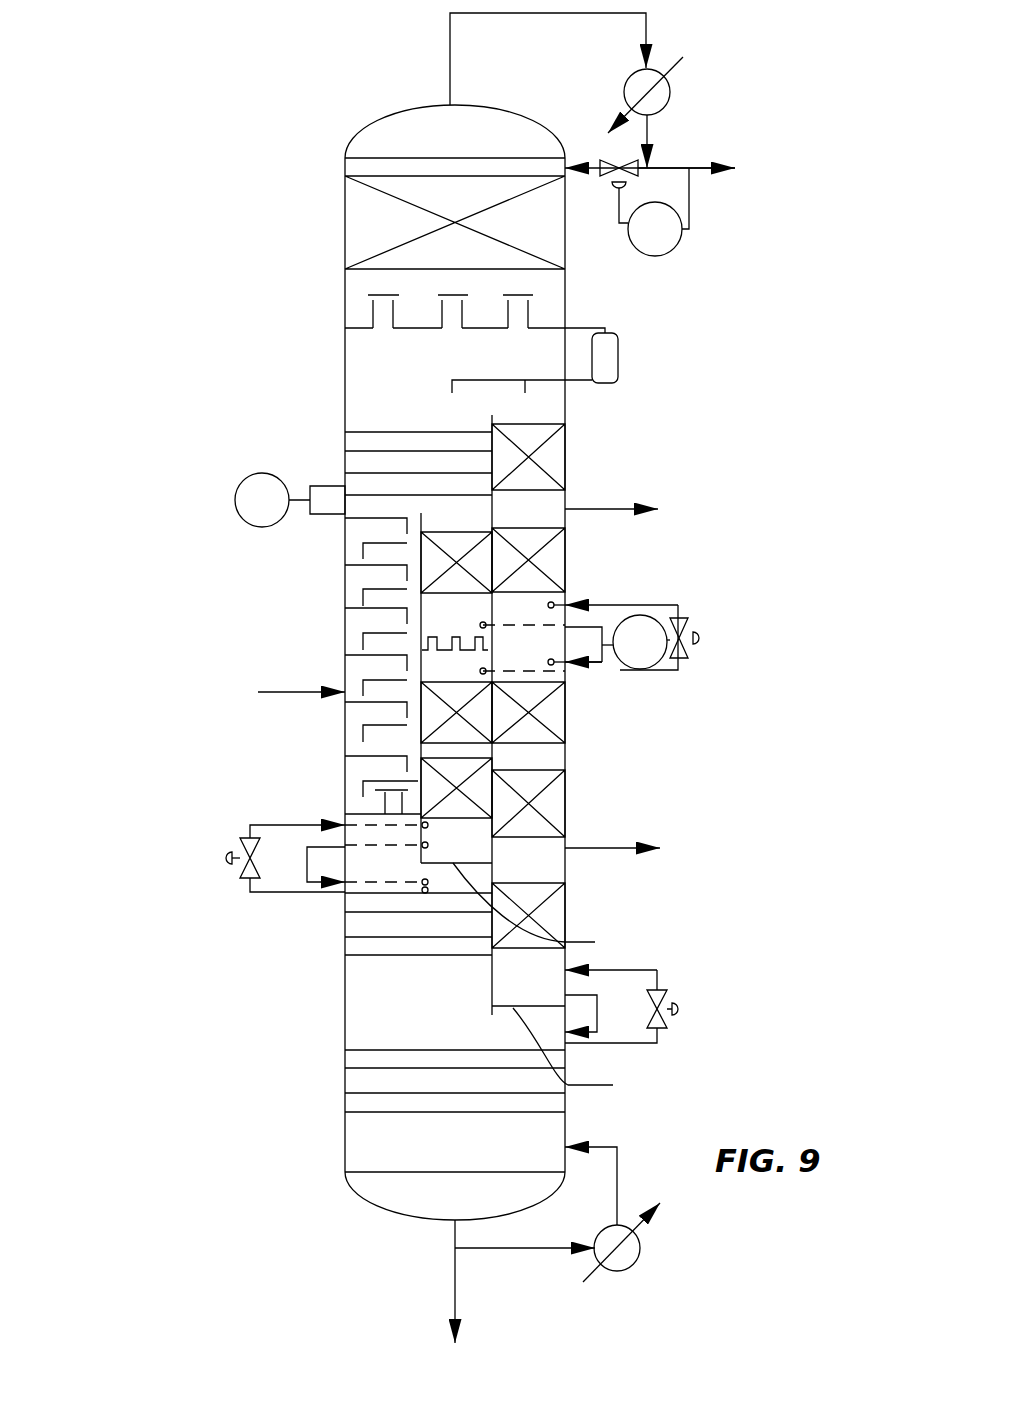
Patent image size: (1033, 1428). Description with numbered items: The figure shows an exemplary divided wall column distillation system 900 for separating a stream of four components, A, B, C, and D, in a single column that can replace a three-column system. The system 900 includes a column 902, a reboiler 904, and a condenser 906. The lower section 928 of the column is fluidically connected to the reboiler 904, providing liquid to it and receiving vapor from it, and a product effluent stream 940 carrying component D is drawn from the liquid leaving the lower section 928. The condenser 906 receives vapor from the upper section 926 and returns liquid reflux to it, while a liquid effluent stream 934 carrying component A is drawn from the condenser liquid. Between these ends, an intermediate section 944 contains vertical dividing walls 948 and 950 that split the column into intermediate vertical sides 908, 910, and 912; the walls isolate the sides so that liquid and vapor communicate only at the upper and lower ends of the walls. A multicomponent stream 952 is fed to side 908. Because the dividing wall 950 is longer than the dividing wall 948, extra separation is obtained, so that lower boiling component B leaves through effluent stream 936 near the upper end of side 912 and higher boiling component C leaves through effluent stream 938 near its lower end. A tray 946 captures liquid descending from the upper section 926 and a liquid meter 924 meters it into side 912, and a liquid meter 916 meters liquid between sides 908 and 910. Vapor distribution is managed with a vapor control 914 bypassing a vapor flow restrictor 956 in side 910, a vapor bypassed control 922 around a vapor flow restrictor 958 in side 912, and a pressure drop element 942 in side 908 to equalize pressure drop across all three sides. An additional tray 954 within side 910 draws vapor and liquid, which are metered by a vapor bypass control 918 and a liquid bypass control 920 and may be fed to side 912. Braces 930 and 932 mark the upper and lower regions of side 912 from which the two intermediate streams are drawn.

The distillation system 900 is at (340, 50).
The column 902 is at (345, 987).
The reboiler 904 is at (615, 1272).
The condenser 906 is at (670, 100).
The intermediate vertical side 908 is at (362, 574).
The intermediate vertical side 910 is at (438, 603).
The intermediate vertical side 912 is at (557, 760).
The vapor control 914 is at (232, 858).
The liquid meter 916 is at (260, 473).
The bypass control 918 is at (695, 640).
The bypass control 920 is at (615, 670).
The vapor bypassed control 922 is at (678, 1009).
The liquid meter 924 is at (618, 358).
The upper section 926 is at (338, 137).
The lower section 928 is at (338, 1025).
The upper side section 930 is at (697, 425).
The lower side section 932 is at (697, 682).
The liquid effluent stream 934 is at (707, 168).
The effluent stream 936 is at (622, 509).
The effluent stream 938 is at (613, 848).
The product effluent stream 940 is at (455, 1300).
The pressure drop element 942 is at (367, 813).
The intermediate section 944 is at (293, 415).
The tray 946 is at (362, 328).
The vertical dividing wall 948 is at (418, 753).
The vertical dividing wall 950 is at (565, 594).
The multicomponent stream 952 is at (313, 692).
The additional tray 954 is at (422, 647).
The vapor flow restrictor 956 is at (547, 911).
The vapor flow restrictor 958 is at (586, 1055).